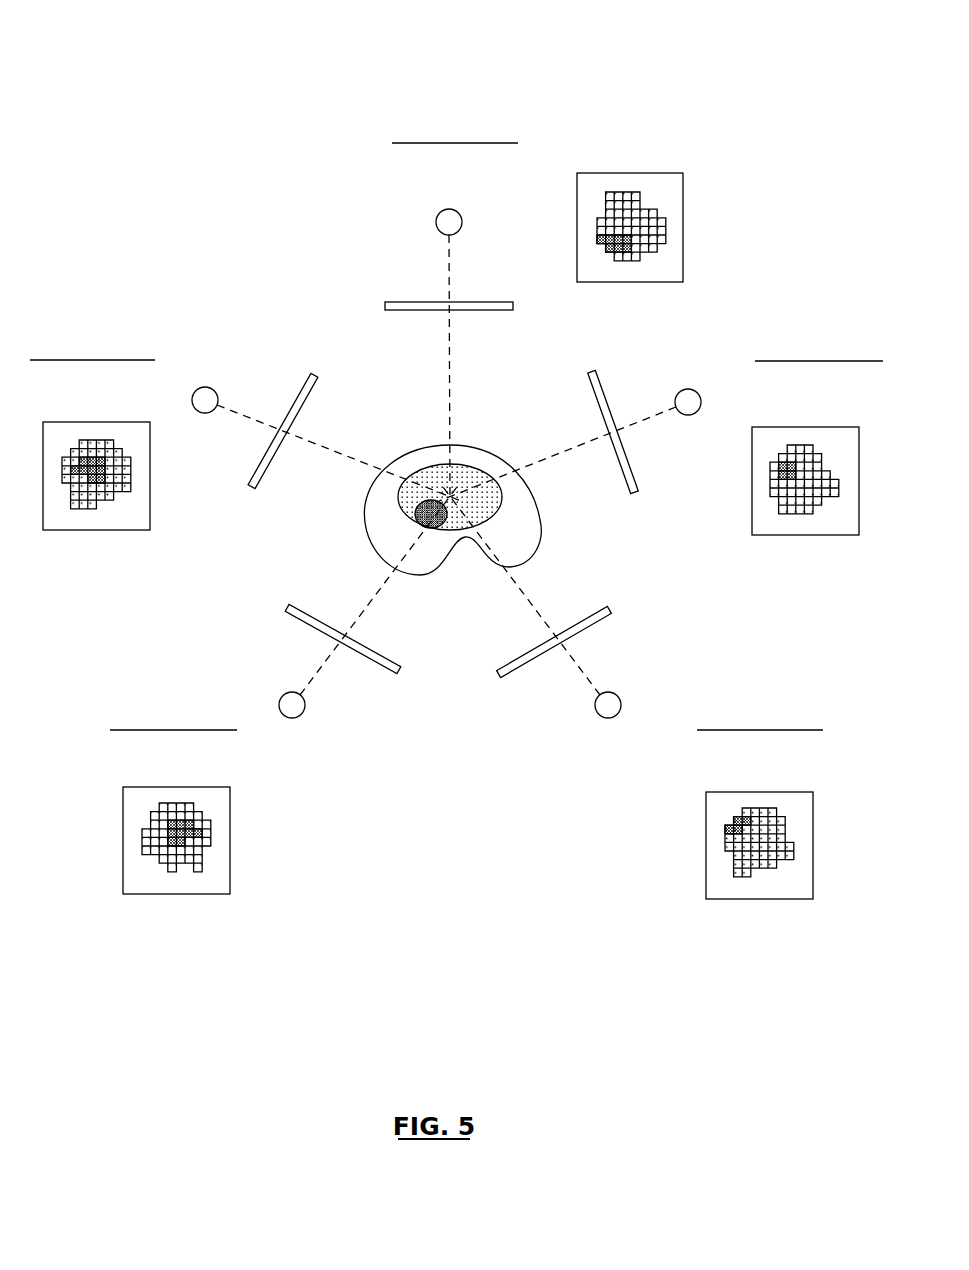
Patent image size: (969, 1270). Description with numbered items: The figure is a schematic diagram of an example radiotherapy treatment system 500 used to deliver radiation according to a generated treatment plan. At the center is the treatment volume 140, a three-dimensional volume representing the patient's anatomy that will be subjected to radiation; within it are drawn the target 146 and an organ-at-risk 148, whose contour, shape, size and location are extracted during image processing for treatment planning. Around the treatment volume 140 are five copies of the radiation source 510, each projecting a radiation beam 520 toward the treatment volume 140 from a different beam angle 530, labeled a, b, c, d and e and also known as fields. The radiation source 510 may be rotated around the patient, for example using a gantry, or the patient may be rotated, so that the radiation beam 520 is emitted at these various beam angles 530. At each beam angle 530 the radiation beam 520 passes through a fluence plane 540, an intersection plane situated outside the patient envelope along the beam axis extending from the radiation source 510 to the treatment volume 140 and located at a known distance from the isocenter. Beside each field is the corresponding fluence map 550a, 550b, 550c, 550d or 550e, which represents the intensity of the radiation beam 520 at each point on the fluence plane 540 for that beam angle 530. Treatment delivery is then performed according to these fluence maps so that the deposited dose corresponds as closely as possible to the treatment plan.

The radiotherapy treatment system 500 is at (100, 66).
The radiation source 510 is at (448, 218).
The radiation beam 520 is at (447, 260).
The beam angle 530 is at (503, 118).
The fluence plane 540 is at (497, 302).
The fluence map 550a is at (655, 180).
The fluence map 550b is at (830, 430).
The fluence map 550c is at (786, 798).
The fluence map 550d is at (150, 793).
The fluence map 550e is at (63, 430).
The treatment volume 140 is at (346, 544).
The target 146 is at (403, 509).
The organ-at-risk 148 is at (497, 493).